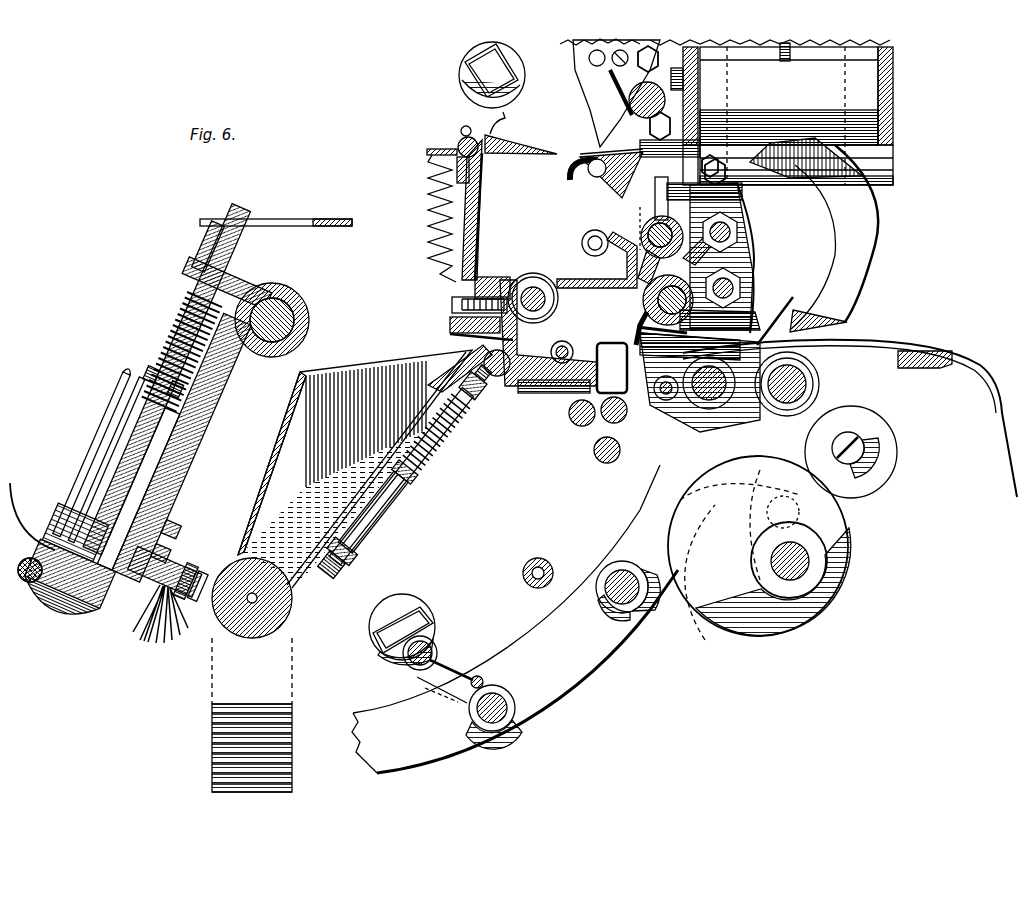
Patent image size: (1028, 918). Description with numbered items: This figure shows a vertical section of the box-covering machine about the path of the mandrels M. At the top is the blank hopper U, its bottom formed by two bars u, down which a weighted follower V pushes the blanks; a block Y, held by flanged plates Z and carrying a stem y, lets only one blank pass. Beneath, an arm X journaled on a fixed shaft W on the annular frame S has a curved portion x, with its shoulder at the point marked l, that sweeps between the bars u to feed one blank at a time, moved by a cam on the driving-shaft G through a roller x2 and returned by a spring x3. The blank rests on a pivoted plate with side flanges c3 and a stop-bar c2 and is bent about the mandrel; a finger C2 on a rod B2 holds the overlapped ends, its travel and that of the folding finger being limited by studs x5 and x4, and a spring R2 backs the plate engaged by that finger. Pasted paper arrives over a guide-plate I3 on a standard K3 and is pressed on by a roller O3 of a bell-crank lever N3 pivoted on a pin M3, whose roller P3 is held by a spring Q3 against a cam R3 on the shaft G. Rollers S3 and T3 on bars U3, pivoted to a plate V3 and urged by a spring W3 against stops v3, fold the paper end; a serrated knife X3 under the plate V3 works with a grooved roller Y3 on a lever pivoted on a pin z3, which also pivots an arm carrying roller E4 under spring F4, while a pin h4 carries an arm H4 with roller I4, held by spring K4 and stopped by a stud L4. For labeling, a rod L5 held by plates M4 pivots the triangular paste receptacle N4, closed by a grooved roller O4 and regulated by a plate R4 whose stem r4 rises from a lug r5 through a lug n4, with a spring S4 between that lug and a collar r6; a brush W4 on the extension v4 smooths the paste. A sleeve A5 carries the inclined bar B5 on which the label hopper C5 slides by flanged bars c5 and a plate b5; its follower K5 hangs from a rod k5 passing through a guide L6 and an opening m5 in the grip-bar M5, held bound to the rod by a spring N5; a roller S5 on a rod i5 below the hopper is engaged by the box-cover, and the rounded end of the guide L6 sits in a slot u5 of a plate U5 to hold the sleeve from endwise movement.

The rod k5 is at (246, 210).
The bar u5 is at (276, 210).
The bar end U5 is at (340, 228).
The bracket L6 is at (236, 268).
The spring N5 is at (180, 310).
The hub A5 is at (310, 318).
The stop m5 is at (148, 372).
The bar B5 is at (218, 378).
The bar M5 is at (208, 395).
The bar c5 is at (195, 418).
The bar C5 is at (170, 455).
The guide K5 is at (72, 488).
The block b5 is at (178, 512).
The frame M is at (80, 605).
The cylinder v4 is at (172, 560).
The pin i5 is at (18, 568).
The pin S5 is at (30, 583).
The brush W4 is at (168, 618).
The roller O4 is at (292, 604).
The hopper N4 is at (355, 469).
The spring tube S4 is at (420, 470).
The nut n4 is at (456, 420).
The collar r6 is at (406, 512).
The rod r4 is at (385, 532).
The bracket r5 is at (362, 562).
The block R4 is at (335, 570).
The arm M4 is at (450, 356).
The rack L5 is at (450, 330).
The pivot c2 is at (480, 190).
The blade tip c3 is at (506, 118).
The arm V3 is at (530, 386).
The roller W3 is at (551, 352).
The ring R2 is at (555, 312).
The pin v3 is at (605, 345).
The frame C2 is at (655, 345).
The plate X3 is at (545, 405).
The roller S3 is at (574, 420).
The roller U3 is at (604, 420).
The roller O3 is at (625, 445).
The roller T3 is at (605, 463).
The pin Y3 is at (665, 400).
The roller M3 is at (712, 398).
The roller W is at (819, 384).
The plate Q3 is at (740, 420).
The plate x3 is at (775, 420).
The plate N3 is at (700, 450).
The post Z is at (698, 95).
The edge y is at (700, 62).
The box V is at (770, 92).
The plate Y is at (705, 130).
The frame U is at (893, 115).
The plate u is at (880, 160).
The cam l is at (799, 153).
The blade x is at (870, 190).
The blade X is at (868, 265).
The nut x4 is at (737, 230).
The nut x5 is at (740, 290).
The plate B2 is at (738, 313).
The guard I3 is at (985, 365).
The block K3 is at (920, 368).
The disc x2 is at (897, 452).
The wheel R3 is at (818, 535).
The shaft G is at (808, 562).
The pin P3 is at (800, 510).
The arc S is at (645, 518).
The roller E4 is at (543, 560).
The roller z3 is at (624, 575).
The roller F4 is at (607, 610).
The roller I4 is at (437, 650).
The arm H4 is at (445, 700).
The pin L4 is at (483, 680).
The roller K4 is at (505, 720).
The roller h4 is at (507, 700).